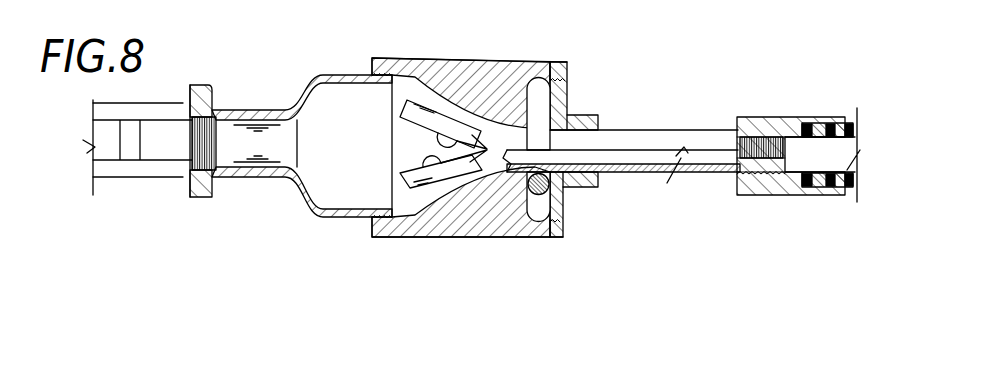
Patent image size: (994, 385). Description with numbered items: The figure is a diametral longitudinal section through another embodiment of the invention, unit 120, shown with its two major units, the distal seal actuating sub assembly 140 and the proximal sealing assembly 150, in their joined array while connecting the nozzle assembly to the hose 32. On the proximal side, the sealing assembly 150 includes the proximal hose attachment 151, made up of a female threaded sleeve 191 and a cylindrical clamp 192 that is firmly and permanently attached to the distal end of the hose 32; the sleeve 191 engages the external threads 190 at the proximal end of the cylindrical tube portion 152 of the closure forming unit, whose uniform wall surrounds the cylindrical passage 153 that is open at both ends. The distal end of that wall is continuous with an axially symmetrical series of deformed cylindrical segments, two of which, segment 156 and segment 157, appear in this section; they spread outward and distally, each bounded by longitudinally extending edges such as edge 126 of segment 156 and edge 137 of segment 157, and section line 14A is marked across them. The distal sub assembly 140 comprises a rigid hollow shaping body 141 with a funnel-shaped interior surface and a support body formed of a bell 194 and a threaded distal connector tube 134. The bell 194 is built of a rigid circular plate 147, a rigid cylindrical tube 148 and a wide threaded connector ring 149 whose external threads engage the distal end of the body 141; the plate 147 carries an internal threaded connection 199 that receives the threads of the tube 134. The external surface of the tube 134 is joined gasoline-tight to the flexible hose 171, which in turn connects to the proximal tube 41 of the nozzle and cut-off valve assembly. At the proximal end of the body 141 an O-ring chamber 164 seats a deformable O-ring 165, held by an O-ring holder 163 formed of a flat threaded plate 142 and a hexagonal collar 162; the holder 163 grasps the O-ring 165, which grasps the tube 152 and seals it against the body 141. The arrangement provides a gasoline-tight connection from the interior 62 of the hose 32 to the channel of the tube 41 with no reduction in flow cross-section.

The proximal tube 41 is at (113, 150).
The threaded distal connector tube 134 is at (177, 128).
The flexible hose 171 is at (172, 172).
The rigid circular plate 147 is at (205, 88).
The internal threaded connection 199 is at (208, 193).
The threaded wide connector ring 149 is at (326, 78).
The rigid cylindrical tube 148 is at (273, 108).
The bell 194 is at (363, 32).
The shaping body 141 is at (458, 58).
The flat rigid threaded plate 142 is at (558, 93).
The hexagonal collar 162 is at (570, 120).
The O-ring holder 163 is at (598, 117).
The O-ring 165 is at (534, 110).
The O-ring chamber 164 is at (540, 213).
The deformed cylindrical segment 156 is at (441, 116).
The longitudinally extending edge 126 is at (461, 116).
The deformed cylindrical segment 157 is at (441, 175).
The longitudinally extending edge 137 is at (462, 168).
The section line 14A is at (392, 188).
The proximal cylindrical tube portion 152 is at (698, 126).
The cylindrical passage 153 is at (668, 162).
The proximal sealing assembly 150 is at (777, 202).
The female threaded sleeve 191 is at (782, 99).
The external threads 190 is at (740, 143).
The cylindrical clamp 192 is at (840, 101).
The proximal hose attachment 151 is at (850, 92).
The hose interior 62 is at (842, 168).
The hose 32 is at (843, 190).
The distal seal actuating sub assembly 140 is at (567, 284).
The unit 120 is at (87, 303).